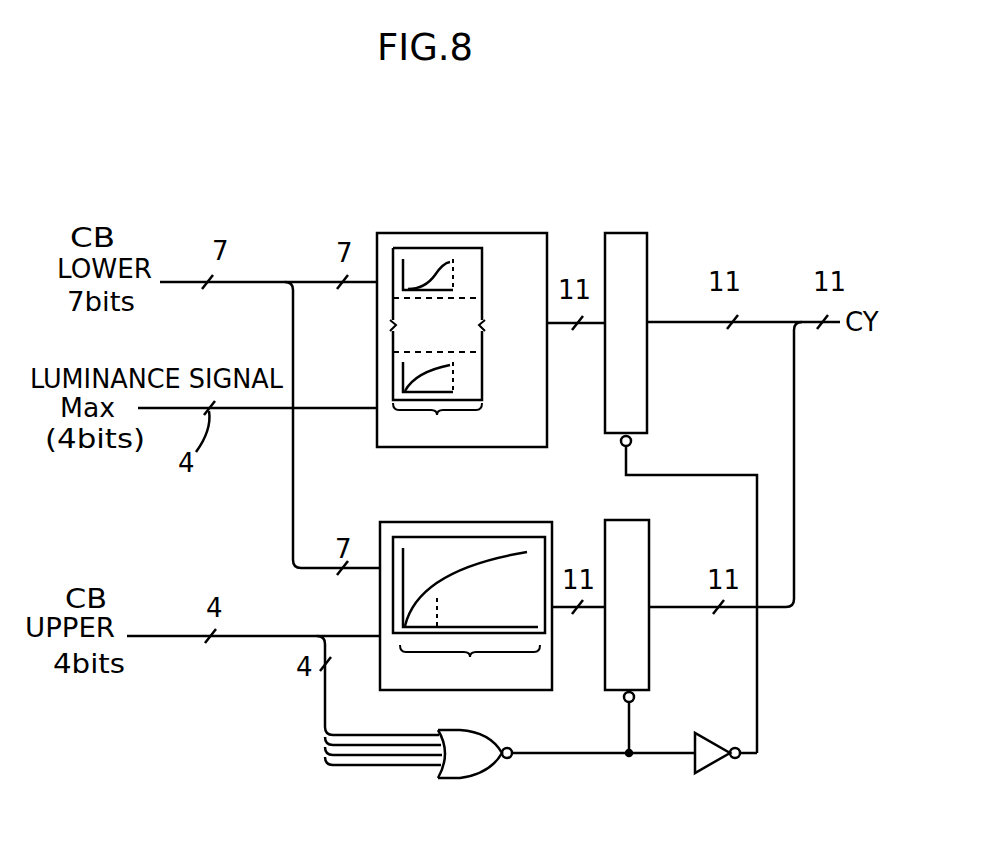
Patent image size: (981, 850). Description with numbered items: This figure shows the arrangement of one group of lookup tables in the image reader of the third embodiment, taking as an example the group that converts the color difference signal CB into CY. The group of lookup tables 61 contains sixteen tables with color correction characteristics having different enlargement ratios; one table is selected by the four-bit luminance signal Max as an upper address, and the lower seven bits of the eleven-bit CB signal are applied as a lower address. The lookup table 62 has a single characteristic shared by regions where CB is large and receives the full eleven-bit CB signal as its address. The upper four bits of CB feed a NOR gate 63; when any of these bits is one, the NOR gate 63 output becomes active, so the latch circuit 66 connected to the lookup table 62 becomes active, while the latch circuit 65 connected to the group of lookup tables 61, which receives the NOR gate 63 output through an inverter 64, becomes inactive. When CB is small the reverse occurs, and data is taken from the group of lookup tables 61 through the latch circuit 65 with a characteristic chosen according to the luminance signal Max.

The group of lookup tables 61 is at (480, 233).
The lookup table 62 is at (517, 522).
The NOR gate 63 is at (485, 733).
The inverter 64 is at (716, 733).
The latch circuit 65 is at (647, 251).
The latch circuit 66 is at (649, 539).